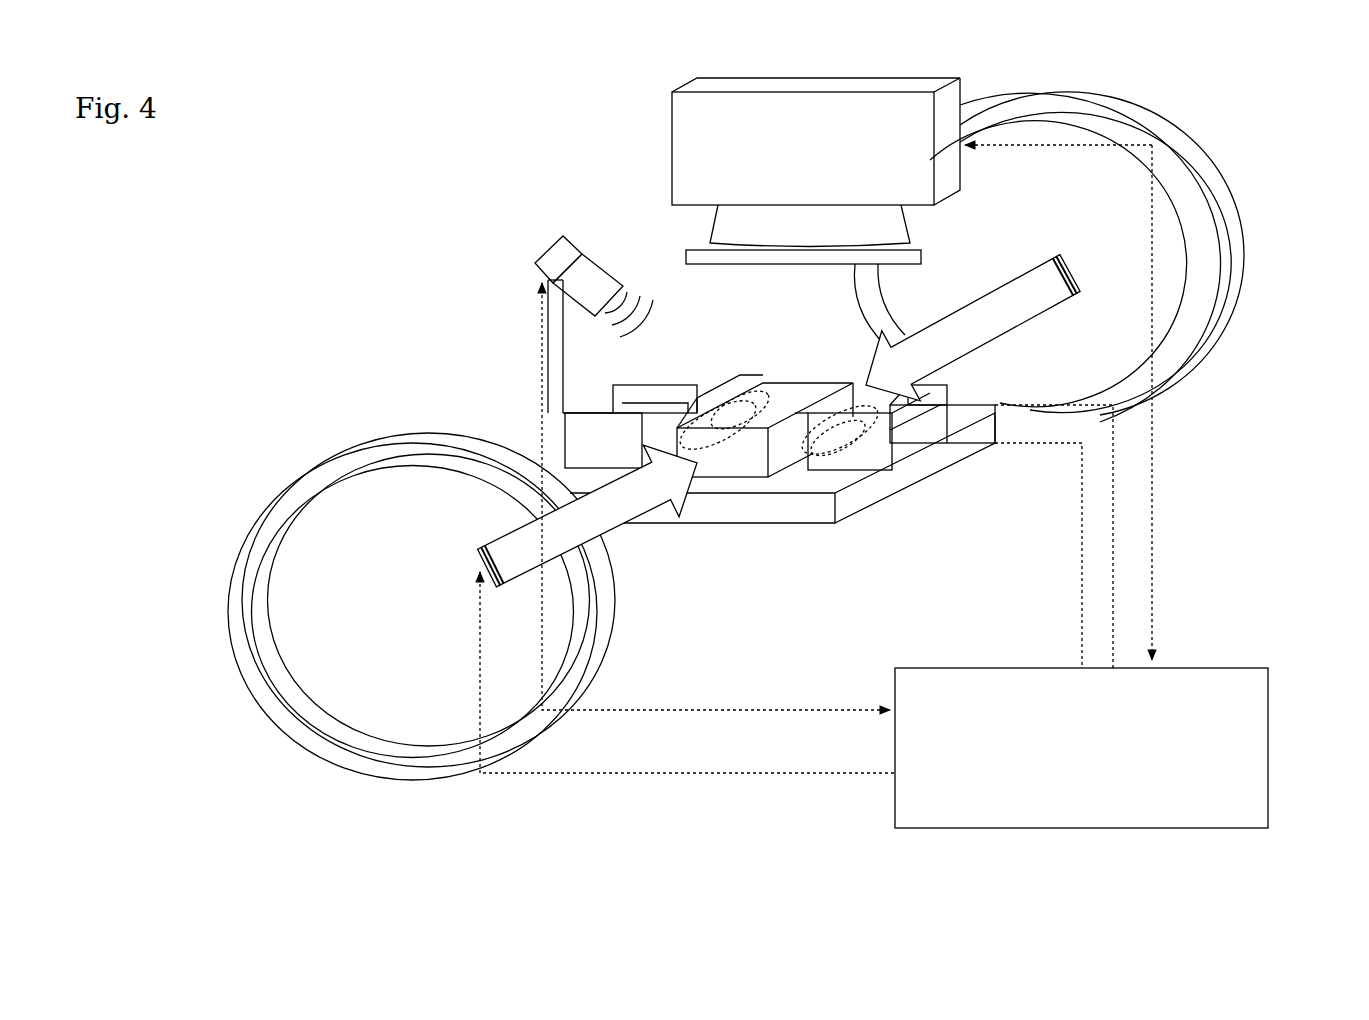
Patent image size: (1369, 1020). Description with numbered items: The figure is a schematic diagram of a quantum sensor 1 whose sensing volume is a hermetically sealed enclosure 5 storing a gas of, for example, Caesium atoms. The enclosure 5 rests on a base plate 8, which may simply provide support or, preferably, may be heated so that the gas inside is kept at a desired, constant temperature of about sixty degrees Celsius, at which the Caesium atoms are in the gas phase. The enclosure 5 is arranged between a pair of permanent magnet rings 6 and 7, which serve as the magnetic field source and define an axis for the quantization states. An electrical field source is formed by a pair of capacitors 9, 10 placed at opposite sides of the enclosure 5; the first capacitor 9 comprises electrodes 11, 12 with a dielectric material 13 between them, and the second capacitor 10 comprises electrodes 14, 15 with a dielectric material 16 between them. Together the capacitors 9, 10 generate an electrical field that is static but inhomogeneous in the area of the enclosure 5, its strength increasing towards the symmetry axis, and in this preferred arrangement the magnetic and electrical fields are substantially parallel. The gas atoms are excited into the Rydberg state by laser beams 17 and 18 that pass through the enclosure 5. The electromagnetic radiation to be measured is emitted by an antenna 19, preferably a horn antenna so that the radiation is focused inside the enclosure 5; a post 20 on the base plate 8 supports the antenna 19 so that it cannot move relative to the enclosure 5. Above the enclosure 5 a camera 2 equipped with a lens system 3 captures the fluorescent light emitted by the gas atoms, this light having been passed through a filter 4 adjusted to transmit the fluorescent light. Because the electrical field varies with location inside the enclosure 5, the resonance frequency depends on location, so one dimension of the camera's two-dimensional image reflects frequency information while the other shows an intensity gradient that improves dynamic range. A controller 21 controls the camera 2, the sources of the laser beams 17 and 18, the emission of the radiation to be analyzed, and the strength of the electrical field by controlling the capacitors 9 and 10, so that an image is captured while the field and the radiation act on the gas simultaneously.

The quantum sensor 1 is at (378, 185).
The camera 2 is at (870, 103).
The lens system 3 is at (775, 215).
The filter 4 is at (690, 252).
The enclosure 5 is at (790, 392).
The permanent magnet ring 6 is at (265, 535).
The permanent magnet ring 7 is at (1178, 357).
The base plate 8 is at (860, 498).
The capacitor 9 is at (582, 390).
The capacitor 10 is at (960, 458).
The electrode 11 is at (580, 435).
The electrode 12 is at (640, 395).
The dielectric material 13 is at (662, 410).
The electrode 14 is at (848, 462).
The electrode 15 is at (950, 405).
The dielectric material 16 is at (898, 447).
The laser beam 17 is at (510, 548).
The laser beam 18 is at (1002, 307).
The antenna 19 is at (553, 262).
The post 20 is at (563, 350).
The controller 21 is at (1258, 710).